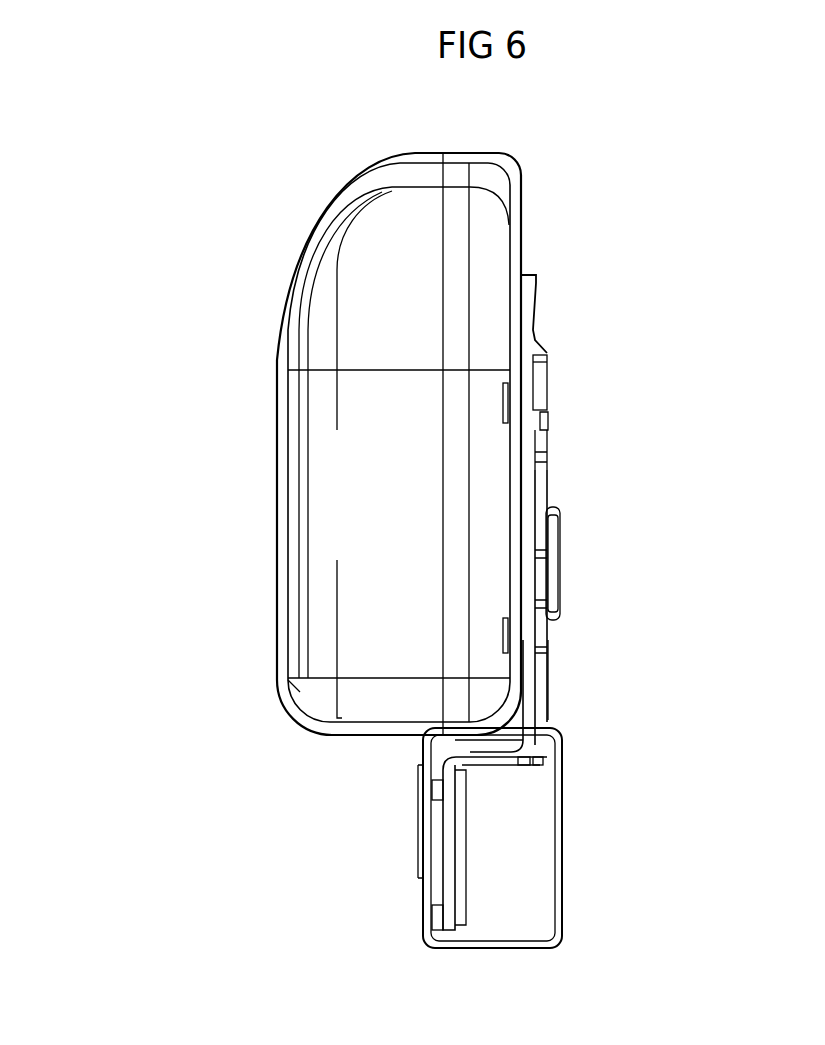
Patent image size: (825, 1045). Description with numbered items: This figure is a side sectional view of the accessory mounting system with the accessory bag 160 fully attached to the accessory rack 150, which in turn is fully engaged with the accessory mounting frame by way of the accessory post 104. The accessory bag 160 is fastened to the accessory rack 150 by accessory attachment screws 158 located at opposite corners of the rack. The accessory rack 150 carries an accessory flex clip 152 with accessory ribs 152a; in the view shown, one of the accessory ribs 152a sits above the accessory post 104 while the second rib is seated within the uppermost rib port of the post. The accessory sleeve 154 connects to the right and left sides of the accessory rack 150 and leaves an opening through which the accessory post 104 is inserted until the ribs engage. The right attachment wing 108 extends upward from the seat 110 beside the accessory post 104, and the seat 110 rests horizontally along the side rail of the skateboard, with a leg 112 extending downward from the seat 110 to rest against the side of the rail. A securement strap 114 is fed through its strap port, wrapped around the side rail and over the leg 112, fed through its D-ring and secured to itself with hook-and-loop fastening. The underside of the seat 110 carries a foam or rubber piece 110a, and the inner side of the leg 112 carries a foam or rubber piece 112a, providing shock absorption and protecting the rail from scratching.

The accessory bag 160 is at (259, 323).
The accessory attachment screws 158 is at (493, 403).
The accessory flex clip 152 is at (551, 291).
The accessory ribs 152a is at (563, 407).
The accessory post 104 is at (562, 436).
The accessory rack 150 is at (542, 478).
The accessory sleeve 154 is at (575, 551).
The right attachment wing 108 is at (559, 665).
The seat 110 is at (449, 746).
The foam or rubber piece 110a is at (555, 765).
The securement strap 114 is at (397, 794).
The leg 112 is at (424, 847).
The foam or rubber piece 112a is at (471, 872).